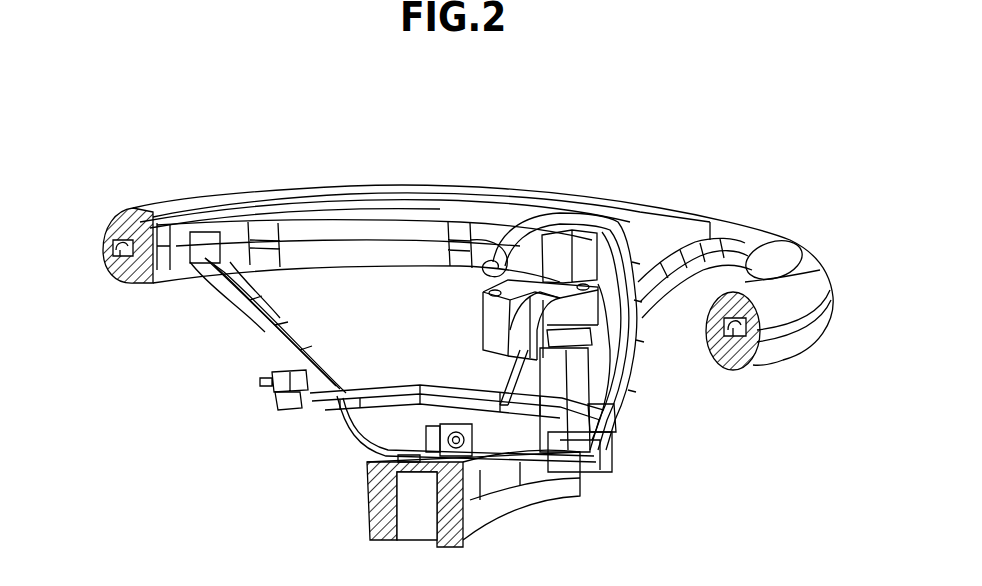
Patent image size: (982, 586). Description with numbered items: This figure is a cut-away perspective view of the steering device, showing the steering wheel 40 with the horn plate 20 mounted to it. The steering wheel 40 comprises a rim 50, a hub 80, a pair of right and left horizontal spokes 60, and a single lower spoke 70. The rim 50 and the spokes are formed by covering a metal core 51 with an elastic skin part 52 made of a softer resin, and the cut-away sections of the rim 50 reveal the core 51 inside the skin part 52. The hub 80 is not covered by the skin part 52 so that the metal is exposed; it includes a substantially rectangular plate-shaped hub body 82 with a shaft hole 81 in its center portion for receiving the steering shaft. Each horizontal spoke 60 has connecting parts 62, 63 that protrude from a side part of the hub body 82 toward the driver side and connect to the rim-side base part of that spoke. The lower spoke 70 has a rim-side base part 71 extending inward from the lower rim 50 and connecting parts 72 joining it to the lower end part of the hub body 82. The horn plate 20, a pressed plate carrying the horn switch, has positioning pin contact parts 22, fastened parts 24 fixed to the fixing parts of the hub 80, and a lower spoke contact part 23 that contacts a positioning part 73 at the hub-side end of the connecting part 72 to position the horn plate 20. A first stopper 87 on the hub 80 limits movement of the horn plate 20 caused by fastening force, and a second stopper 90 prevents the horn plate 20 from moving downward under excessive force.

The horn plate 20 is at (380, 382).
The positioning pin contact part 22 is at (600, 412).
The lower spoke contact part 23 is at (272, 375).
The fastened part 24 is at (446, 424).
The steering wheel 40 is at (606, 198).
The rim 50 is at (351, 200).
The core 51 is at (113, 247).
The skin part 52 is at (122, 216).
The horizontal spoke 60 is at (648, 350).
The connecting part 62 is at (600, 376).
The connecting part 63 is at (510, 370).
The lower spoke 70 is at (240, 330).
The rim-side base part 71 is at (210, 264).
The connecting part 72 is at (286, 340).
The positioning part 73 is at (278, 396).
The hub 80 is at (482, 505).
The shaft hole 81 is at (416, 498).
The hub body 82 is at (500, 470).
The first stopper 87 is at (426, 432).
The second stopper 90 is at (588, 444).